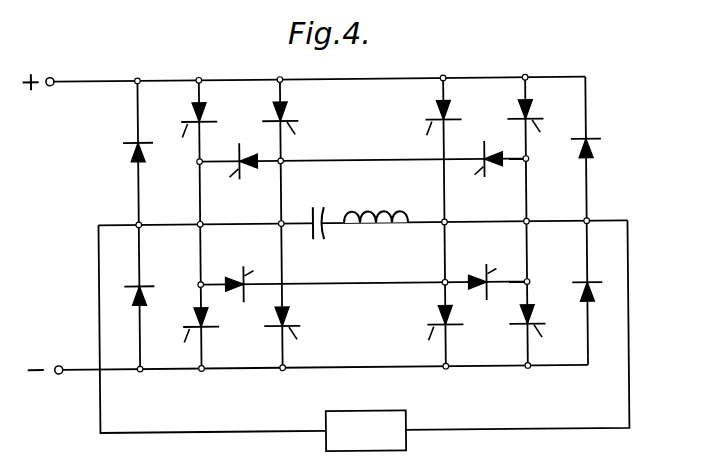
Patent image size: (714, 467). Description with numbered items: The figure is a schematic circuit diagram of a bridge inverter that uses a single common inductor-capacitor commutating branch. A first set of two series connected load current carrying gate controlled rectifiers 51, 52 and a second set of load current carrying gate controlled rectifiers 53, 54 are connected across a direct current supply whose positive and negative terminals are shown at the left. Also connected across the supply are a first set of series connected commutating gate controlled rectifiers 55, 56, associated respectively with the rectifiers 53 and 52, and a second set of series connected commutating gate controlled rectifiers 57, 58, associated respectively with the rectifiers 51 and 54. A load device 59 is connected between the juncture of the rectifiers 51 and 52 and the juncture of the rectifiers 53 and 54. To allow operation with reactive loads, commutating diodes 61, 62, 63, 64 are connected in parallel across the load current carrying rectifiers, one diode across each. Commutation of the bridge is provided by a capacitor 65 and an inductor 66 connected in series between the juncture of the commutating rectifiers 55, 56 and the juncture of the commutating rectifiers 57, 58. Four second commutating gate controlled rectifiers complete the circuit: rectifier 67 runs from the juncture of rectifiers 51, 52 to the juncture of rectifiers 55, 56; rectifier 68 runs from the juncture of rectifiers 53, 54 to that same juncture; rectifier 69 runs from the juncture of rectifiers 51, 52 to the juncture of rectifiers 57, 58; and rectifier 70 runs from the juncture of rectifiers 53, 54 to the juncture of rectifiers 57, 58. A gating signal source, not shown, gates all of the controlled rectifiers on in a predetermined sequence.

The load current carrying gate controlled rectifier 51 is at (191, 112).
The load current carrying gate controlled rectifier 52 is at (194, 325).
The load current carrying gate controlled rectifier 53 is at (537, 113).
The load current carrying gate controlled rectifier 54 is at (538, 324).
The first commutating gate controlled rectifier 55 is at (291, 116).
The first commutating gate controlled rectifier 56 is at (292, 324).
The first commutating gate controlled rectifier 57 is at (437, 115).
The first commutating gate controlled rectifier 58 is at (437, 324).
The load device 59 is at (358, 409).
The commutating diode 61 is at (134, 138).
The commutating diode 62 is at (136, 282).
The commutating diode 63 is at (590, 136).
The commutating diode 64 is at (591, 279).
The capacitor 65 is at (326, 213).
The inductor 66 is at (381, 211).
The second commutating gate controlled rectifier 67 is at (244, 171).
The second commutating gate controlled rectifier 68 is at (489, 171).
The second commutating gate controlled rectifier 69 is at (242, 276).
The second commutating gate controlled rectifier 70 is at (484, 272).